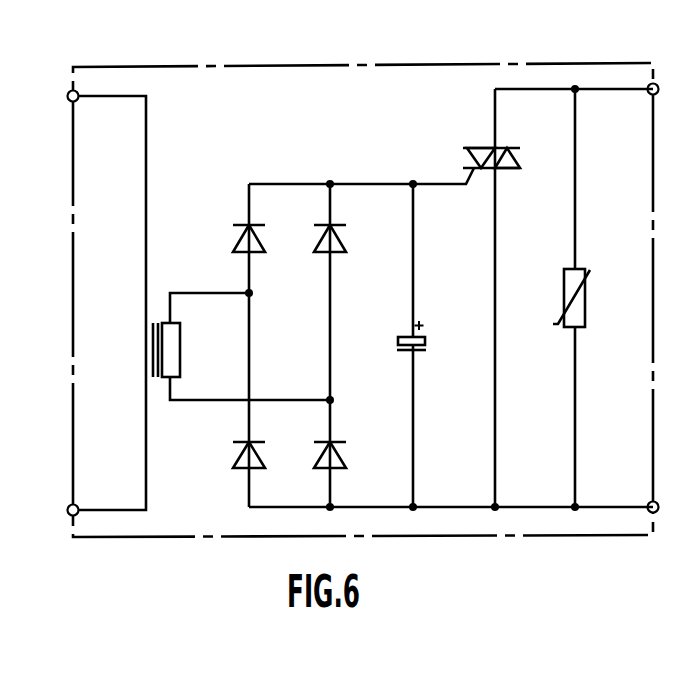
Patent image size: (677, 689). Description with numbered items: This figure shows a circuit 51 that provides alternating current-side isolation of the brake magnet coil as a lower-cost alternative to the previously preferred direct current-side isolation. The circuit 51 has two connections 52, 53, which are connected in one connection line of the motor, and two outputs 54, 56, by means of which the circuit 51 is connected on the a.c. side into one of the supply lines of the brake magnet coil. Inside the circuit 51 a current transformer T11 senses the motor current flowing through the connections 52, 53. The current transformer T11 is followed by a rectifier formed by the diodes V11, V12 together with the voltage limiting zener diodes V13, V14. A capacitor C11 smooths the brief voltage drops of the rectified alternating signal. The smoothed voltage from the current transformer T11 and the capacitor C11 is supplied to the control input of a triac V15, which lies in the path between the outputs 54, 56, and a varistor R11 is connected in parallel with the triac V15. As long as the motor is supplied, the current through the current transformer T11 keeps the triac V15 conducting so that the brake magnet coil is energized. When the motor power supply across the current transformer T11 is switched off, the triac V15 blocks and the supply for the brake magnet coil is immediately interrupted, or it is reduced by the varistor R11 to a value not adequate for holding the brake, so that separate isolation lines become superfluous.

The circuit 51 is at (189, 514).
The connection 52 is at (78, 98).
The connection 53 is at (77, 506).
The output 54 is at (648, 87).
The output 56 is at (651, 512).
The diode V11 is at (265, 233).
The diode V12 is at (266, 448).
The zener diode V13 is at (348, 233).
The zener diode V14 is at (347, 448).
The triac V15 is at (511, 146).
The current transformer T11 is at (241, 346).
The capacitor C11 is at (429, 336).
The varistor R11 is at (587, 298).